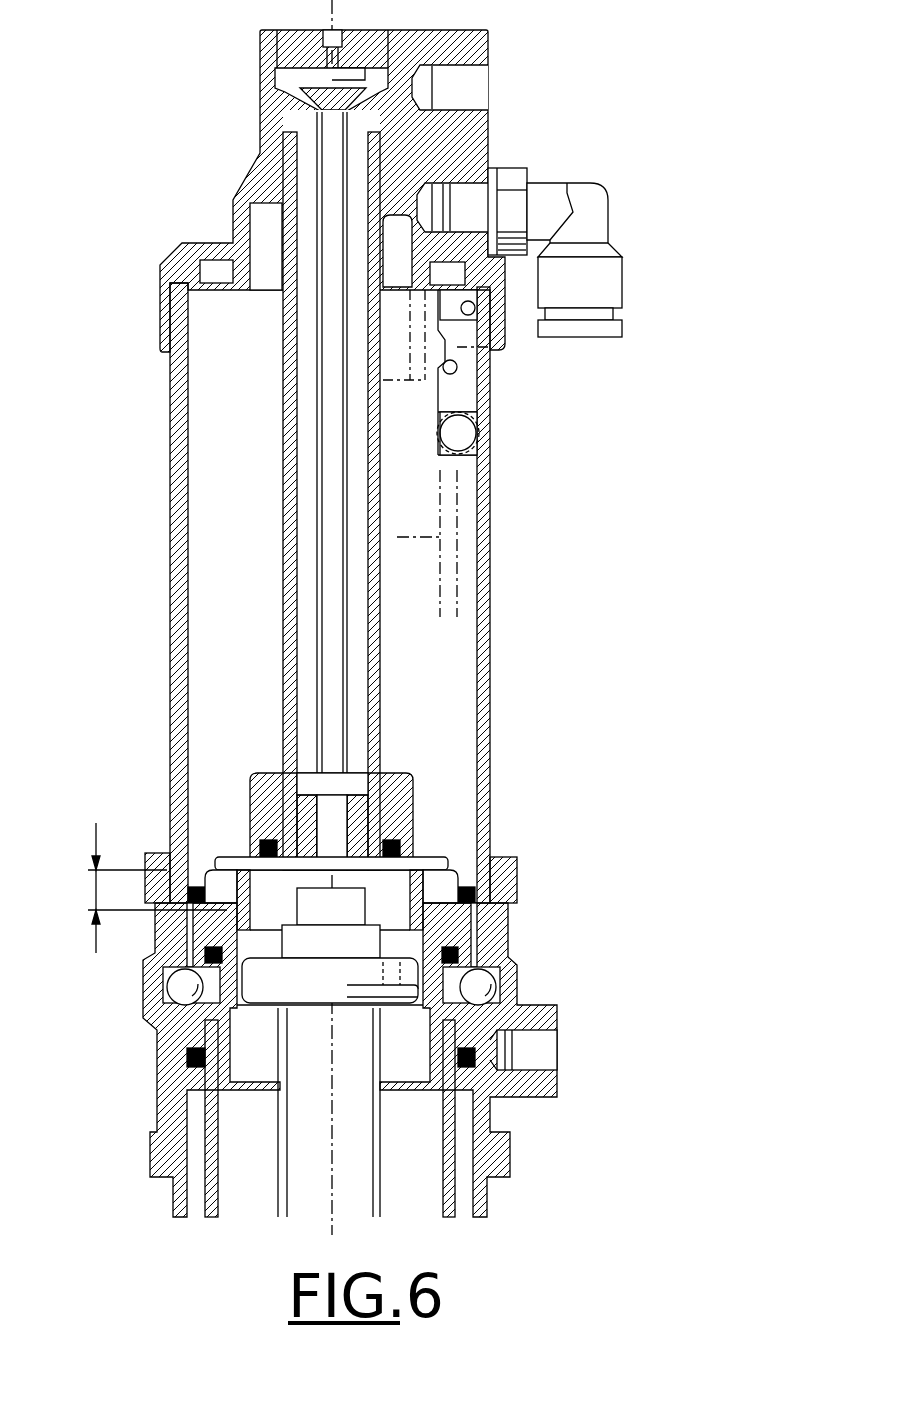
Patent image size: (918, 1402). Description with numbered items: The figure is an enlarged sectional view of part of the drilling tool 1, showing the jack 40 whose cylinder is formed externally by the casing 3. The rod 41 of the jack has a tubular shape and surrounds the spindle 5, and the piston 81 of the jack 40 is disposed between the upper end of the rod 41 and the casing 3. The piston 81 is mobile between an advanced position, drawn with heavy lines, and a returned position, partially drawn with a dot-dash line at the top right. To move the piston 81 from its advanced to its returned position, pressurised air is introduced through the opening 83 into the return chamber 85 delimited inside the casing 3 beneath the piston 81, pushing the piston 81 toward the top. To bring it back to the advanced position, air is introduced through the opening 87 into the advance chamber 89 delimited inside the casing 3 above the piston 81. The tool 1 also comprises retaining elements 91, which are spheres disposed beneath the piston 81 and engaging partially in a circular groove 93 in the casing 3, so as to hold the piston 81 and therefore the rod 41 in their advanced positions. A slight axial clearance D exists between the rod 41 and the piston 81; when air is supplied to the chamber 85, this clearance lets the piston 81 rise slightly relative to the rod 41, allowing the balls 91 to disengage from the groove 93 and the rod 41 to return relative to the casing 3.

The drilling tool 1 is at (549, 519).
The casing 3 is at (502, 616).
The spindle 5 is at (392, 1149).
The jack 40 is at (158, 667).
The rod 41 is at (208, 1193).
The piston 81 is at (507, 348).
The opening 83 is at (545, 1053).
The return chamber 85 is at (470, 940).
The opening 87 is at (465, 194).
The advance chamber 89 is at (455, 768).
The retaining elements 91 is at (180, 987).
The circular groove 93 is at (166, 999).
The axial clearance D is at (95, 891).